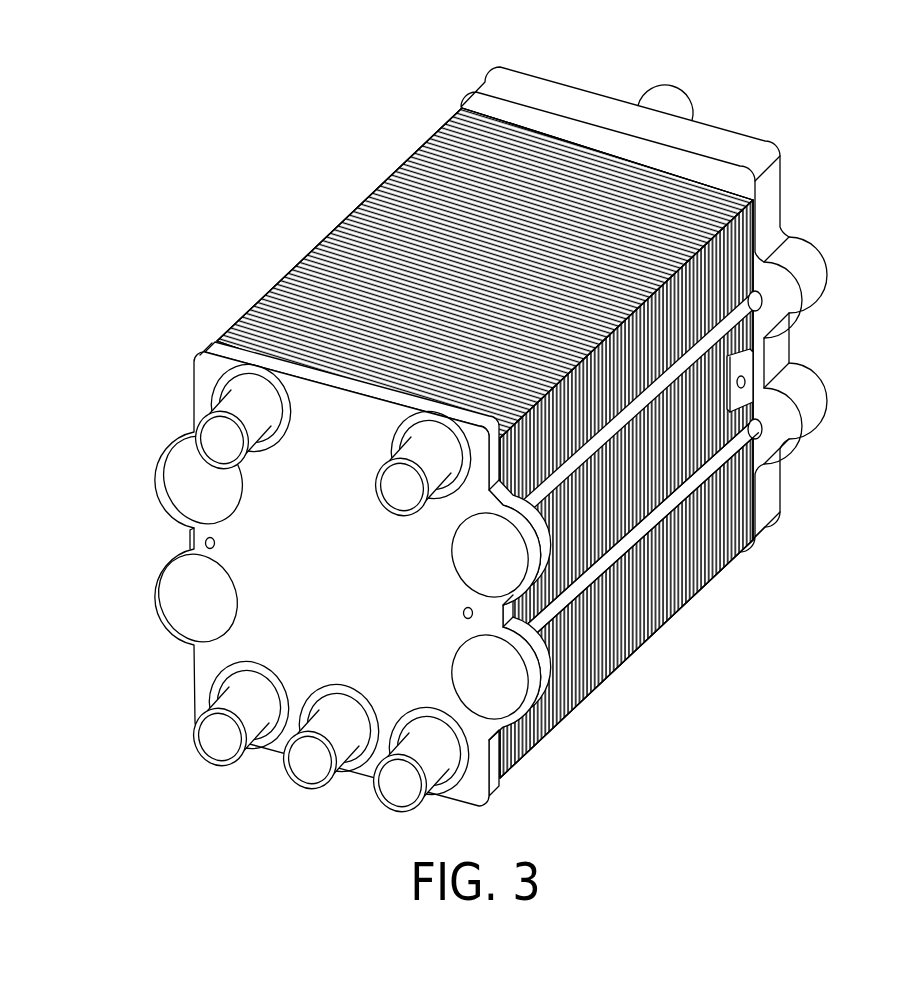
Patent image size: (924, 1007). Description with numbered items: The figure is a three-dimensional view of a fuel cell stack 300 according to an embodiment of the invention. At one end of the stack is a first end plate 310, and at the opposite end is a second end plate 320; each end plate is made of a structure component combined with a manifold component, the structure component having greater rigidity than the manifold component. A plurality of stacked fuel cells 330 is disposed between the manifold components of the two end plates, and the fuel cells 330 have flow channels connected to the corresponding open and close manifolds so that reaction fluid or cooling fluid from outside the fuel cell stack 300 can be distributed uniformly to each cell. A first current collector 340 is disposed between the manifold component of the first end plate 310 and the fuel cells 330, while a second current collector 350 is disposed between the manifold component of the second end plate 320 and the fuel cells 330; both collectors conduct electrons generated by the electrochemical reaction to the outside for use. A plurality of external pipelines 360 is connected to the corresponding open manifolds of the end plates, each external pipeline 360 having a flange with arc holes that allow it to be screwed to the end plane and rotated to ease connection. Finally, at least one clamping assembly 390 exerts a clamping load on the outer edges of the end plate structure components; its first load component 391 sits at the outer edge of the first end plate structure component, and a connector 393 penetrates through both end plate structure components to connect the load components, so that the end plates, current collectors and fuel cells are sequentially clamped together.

The fuel cell stack 300 is at (503, 451).
The first end plate 310 is at (220, 353).
The second end plate 320 is at (408, 61).
The fuel cell 330 is at (228, 222).
The first current collector 340 is at (613, 665).
The second current collector 350 is at (756, 410).
The external pipeline 360 is at (663, 100).
The clamping assembly 390 is at (673, 493).
The first load component 391 is at (600, 585).
The connector 393 is at (670, 507).